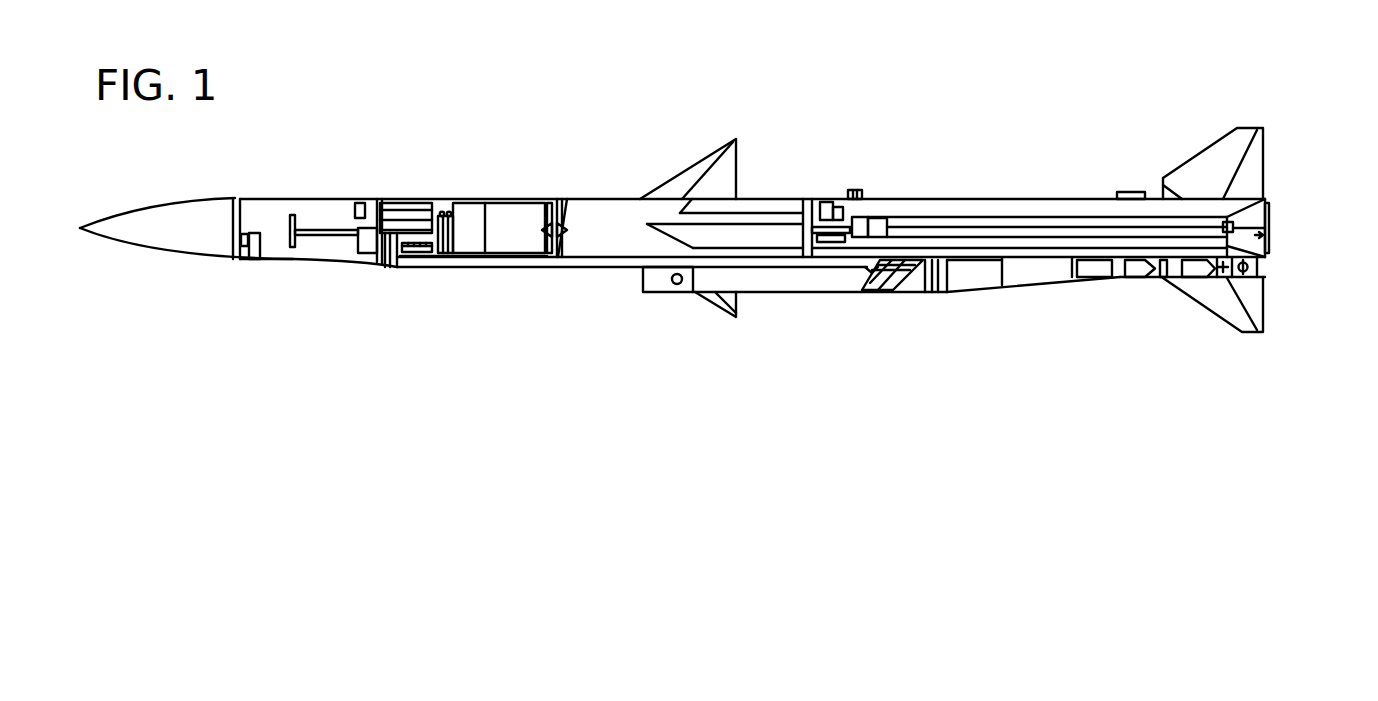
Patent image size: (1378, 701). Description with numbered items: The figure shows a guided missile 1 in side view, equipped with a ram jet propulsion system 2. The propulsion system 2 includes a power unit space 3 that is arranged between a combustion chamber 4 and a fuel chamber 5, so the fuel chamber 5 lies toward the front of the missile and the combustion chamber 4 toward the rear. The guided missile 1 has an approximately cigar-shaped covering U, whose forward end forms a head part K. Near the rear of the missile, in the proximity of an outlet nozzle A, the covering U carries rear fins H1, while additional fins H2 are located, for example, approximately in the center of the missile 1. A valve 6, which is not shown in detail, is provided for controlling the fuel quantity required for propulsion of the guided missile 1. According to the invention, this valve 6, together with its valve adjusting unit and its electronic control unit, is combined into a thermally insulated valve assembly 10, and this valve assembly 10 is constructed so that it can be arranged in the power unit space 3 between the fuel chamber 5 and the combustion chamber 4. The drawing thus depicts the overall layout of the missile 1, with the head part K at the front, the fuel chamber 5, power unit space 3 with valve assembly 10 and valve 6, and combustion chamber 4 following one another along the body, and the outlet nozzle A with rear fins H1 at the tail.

The guided missile 1 is at (698, 468).
The head part K is at (153, 237).
The covering U is at (463, 262).
The fuel chamber 5 is at (600, 242).
The additional fins H2 is at (692, 171).
The valve 6 is at (822, 204).
The valve assembly 10 is at (852, 192).
The power unit space 3 is at (833, 245).
The ram jet propulsion system 2 is at (1047, 253).
The combustion chamber 4 is at (1225, 260).
The outlet nozzle A is at (1270, 222).
The rear fins H1 is at (1253, 298).